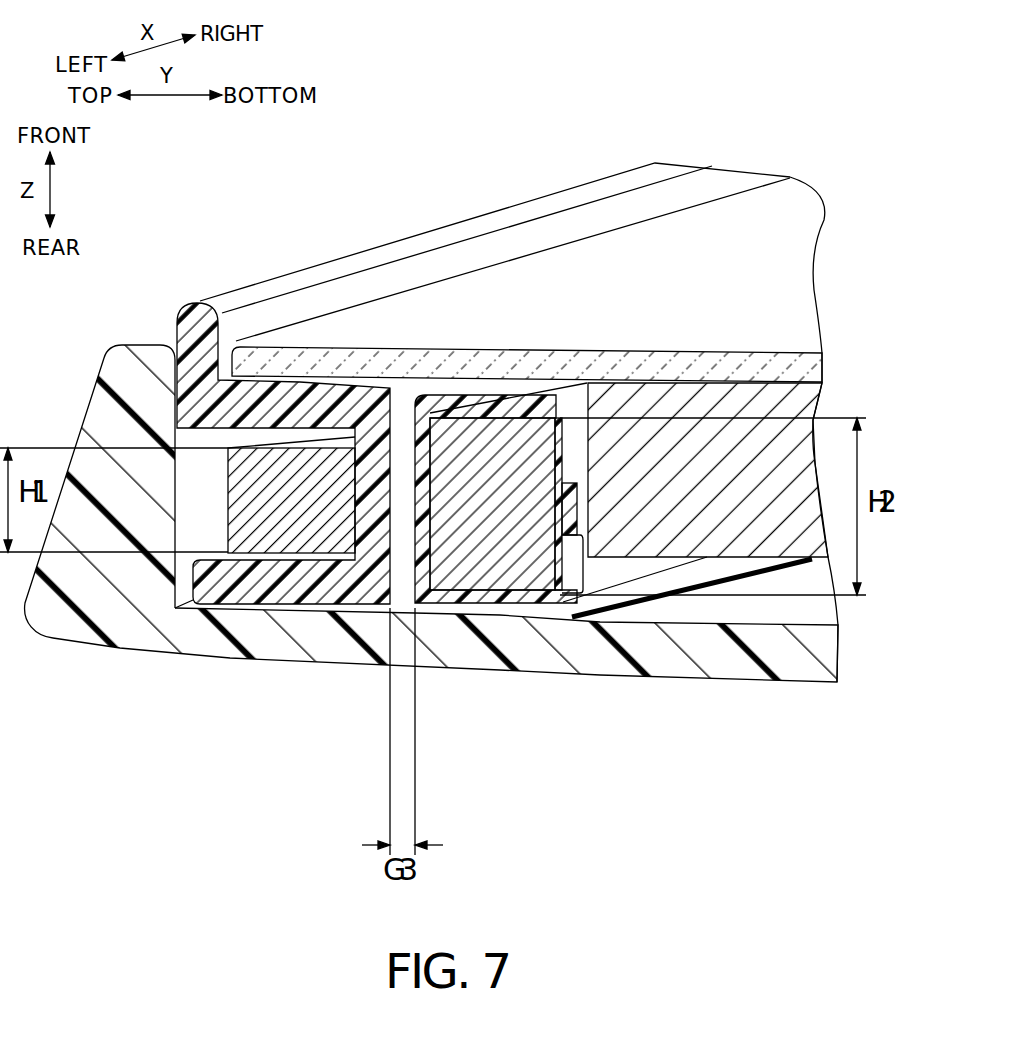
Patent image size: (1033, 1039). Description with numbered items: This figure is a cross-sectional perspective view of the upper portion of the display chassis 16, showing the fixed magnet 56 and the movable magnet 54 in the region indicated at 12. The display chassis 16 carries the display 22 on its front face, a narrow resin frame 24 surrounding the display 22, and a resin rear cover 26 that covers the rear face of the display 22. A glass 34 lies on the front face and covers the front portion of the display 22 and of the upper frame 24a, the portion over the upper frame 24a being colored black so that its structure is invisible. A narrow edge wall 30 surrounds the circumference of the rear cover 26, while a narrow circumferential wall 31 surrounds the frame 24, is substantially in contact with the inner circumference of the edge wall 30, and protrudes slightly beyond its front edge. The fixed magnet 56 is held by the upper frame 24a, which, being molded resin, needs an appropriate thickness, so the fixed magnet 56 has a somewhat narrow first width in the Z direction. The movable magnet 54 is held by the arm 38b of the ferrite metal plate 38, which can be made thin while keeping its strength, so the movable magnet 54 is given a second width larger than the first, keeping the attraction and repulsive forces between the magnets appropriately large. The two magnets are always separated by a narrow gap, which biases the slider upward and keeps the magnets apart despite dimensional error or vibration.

The casing 12 is at (175, 265).
The display chassis 16 is at (743, 90).
The display 22 is at (813, 412).
The frame 24 is at (495, 187).
The upper frame 24a is at (628, 170).
The rear cover 26 is at (718, 653).
The edge wall 30 is at (147, 342).
The circumferential wall 31 is at (566, 207).
The glass 34 is at (795, 272).
The metal plate 38 is at (512, 615).
The arm 38b is at (523, 594).
The movable magnet 54 is at (493, 570).
The fixed magnet 56 is at (263, 513).